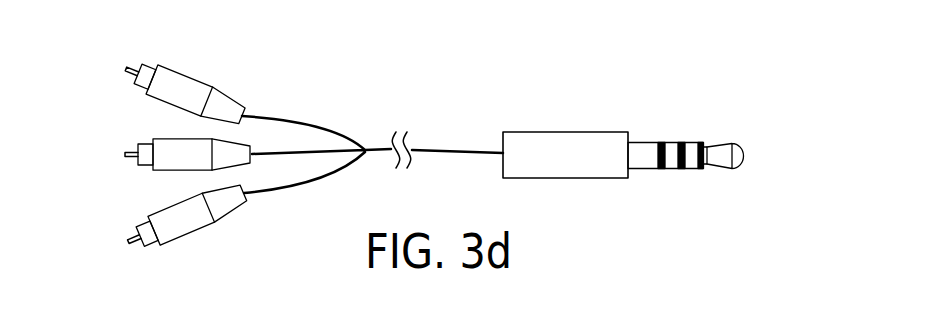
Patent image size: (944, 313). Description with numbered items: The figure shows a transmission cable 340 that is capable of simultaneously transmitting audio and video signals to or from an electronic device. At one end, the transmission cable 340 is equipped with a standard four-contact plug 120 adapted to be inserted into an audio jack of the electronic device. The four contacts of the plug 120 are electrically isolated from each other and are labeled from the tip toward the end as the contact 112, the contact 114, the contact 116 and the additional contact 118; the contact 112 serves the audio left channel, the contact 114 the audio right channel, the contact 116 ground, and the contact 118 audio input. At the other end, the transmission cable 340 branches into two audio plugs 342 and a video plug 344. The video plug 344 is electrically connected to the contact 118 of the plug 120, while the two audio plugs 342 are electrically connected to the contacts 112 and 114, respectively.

The audio plugs 342 is at (120, 155).
The video plug 344 is at (122, 240).
The transmission cable 340 is at (440, 148).
The plug 120 is at (562, 130).
The contact 118 is at (644, 147).
The contact 116 is at (670, 148).
The contact 114 is at (690, 148).
The contact 112 is at (730, 165).